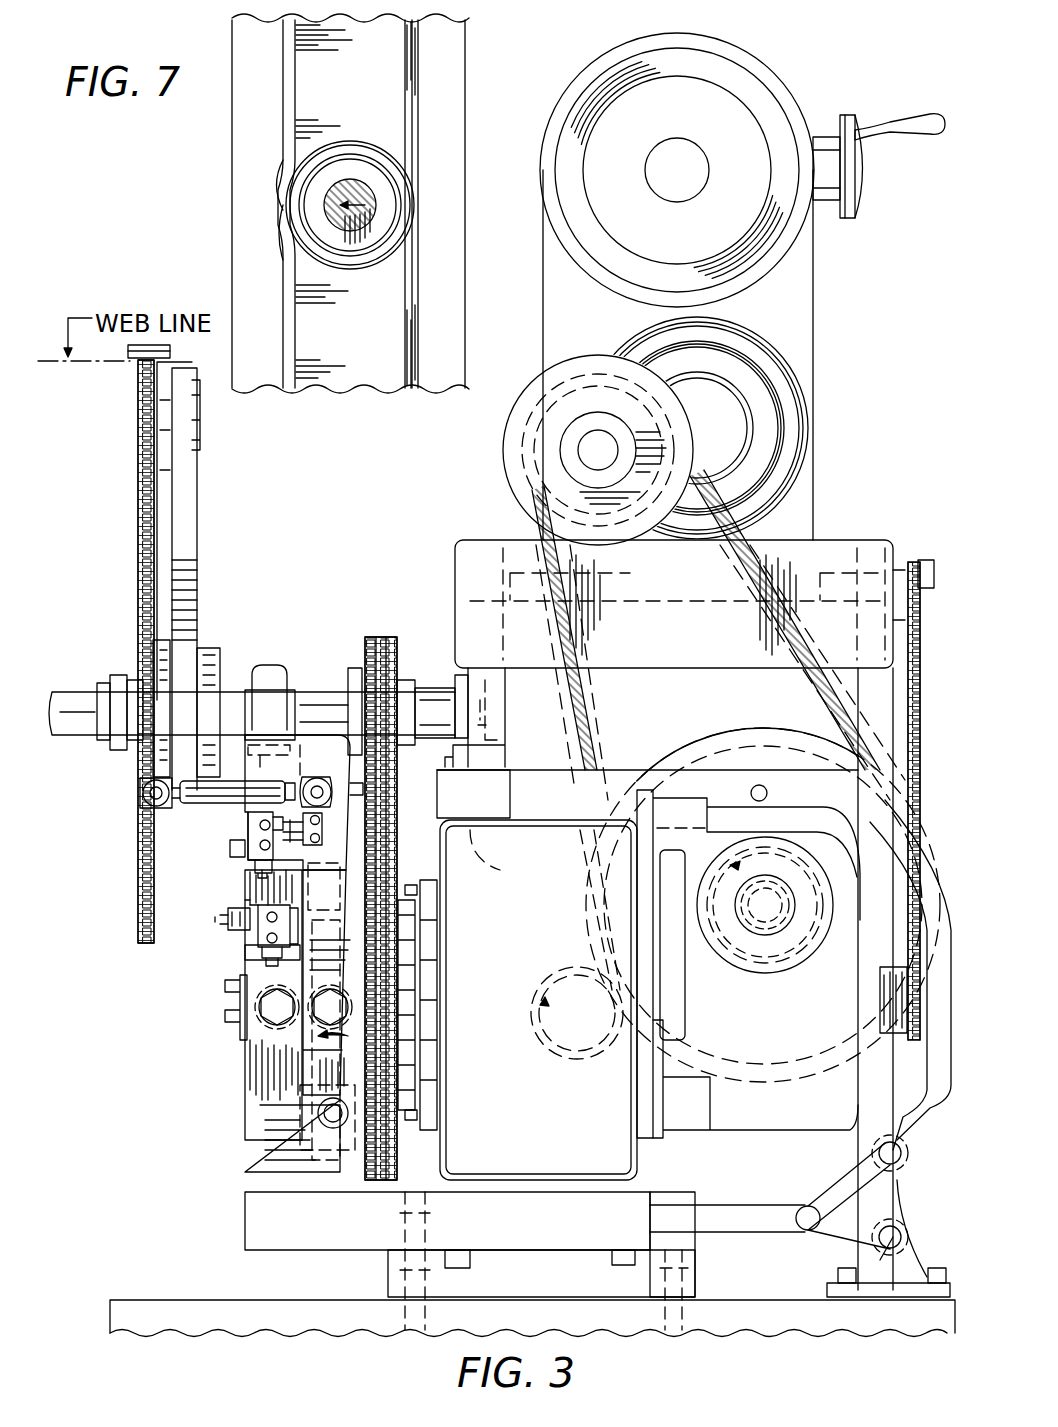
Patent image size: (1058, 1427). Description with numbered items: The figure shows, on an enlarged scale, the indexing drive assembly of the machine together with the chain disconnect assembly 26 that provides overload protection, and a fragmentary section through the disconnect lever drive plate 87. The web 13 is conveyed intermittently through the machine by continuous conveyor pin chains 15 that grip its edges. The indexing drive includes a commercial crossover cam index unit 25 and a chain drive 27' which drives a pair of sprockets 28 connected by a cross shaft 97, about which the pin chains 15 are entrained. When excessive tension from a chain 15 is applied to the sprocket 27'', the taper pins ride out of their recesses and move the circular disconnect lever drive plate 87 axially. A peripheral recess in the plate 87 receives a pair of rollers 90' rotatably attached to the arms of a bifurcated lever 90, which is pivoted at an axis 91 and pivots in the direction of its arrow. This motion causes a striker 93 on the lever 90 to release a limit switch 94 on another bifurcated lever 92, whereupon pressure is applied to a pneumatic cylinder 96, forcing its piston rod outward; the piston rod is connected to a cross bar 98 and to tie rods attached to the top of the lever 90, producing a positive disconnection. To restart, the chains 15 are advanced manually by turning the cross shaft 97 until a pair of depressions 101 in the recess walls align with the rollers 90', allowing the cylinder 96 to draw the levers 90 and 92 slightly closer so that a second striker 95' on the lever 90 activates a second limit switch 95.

In FIG. 3, the web 13 is at (149, 339).
In FIG. 3, the continuous conveyor pin chains 15 is at (138, 496).
In FIG. 3, the crossover cam index unit 25 is at (532, 1148).
In FIG. 3, the chain disconnect assembly 26 is at (234, 1048).
In FIG. 3, the chain drive 27' is at (372, 890).
In FIG. 3, the sprocket 27'' is at (426, 1028).
In FIG. 3, the sprockets 28 is at (139, 558).
In FIG. 7, the disconnect lever drive plate 87 is at (355, 93).
In FIG. 3, the bifurcated lever 90 is at (338, 1011).
In FIG. 7, the rollers 90' is at (350, 222).
In FIG. 3, the pivot axis 91 is at (333, 1128).
In FIG. 3, the bifurcated lever 92 is at (252, 962).
In FIG. 3, the striker 93 is at (240, 895).
In FIG. 3, the limit switch 94 is at (262, 947).
In FIG. 3, the second limit switch 95 is at (241, 845).
In FIG. 3, the second striker 95' is at (333, 844).
In FIG. 3, the pneumatic cylinder 96 is at (325, 773).
In FIG. 3, the cross shaft 97 is at (318, 692).
In FIG. 3, the cross bar 98 is at (141, 794).
In FIG. 7, the depressions 101 is at (280, 202).